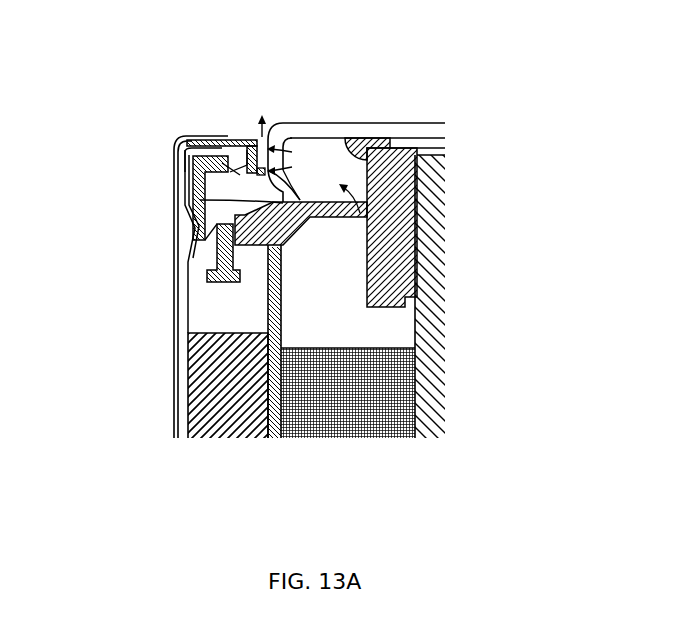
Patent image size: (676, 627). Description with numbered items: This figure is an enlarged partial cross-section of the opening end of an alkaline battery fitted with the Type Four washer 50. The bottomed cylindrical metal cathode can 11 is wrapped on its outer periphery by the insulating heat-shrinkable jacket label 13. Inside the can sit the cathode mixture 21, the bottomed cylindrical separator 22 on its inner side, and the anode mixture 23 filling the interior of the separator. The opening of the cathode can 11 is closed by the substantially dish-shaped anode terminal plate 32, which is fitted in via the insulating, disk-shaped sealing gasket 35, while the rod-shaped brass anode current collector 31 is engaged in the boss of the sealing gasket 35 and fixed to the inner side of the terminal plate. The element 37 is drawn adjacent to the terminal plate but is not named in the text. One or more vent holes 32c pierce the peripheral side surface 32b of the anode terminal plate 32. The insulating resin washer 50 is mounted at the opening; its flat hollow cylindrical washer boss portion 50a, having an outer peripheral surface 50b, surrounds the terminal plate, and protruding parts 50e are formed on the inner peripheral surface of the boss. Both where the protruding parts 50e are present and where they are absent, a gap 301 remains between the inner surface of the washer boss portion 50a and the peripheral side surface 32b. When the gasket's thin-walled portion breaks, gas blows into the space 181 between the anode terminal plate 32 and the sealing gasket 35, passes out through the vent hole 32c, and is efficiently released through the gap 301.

The cathode can 11 is at (183, 312).
The jacket label 13 is at (173, 238).
The cathode mixture 21 is at (216, 438).
The separator 22 is at (273, 438).
The anode mixture 23 is at (388, 425).
The anode current collector 31 is at (428, 405).
The anode terminal plate 32 is at (417, 127).
The peripheral side surface 32b is at (270, 122).
The vent hole 32c is at (302, 150).
The sealing gasket 35 is at (407, 240).
The terminal tab 37 is at (377, 148).
The washer 50 is at (194, 138).
The washer boss portion 50a is at (256, 140).
The outer peripheral surface 50b is at (232, 139).
The protruding part 50e is at (232, 176).
The space 181 is at (323, 150).
The gap 301 is at (245, 165).